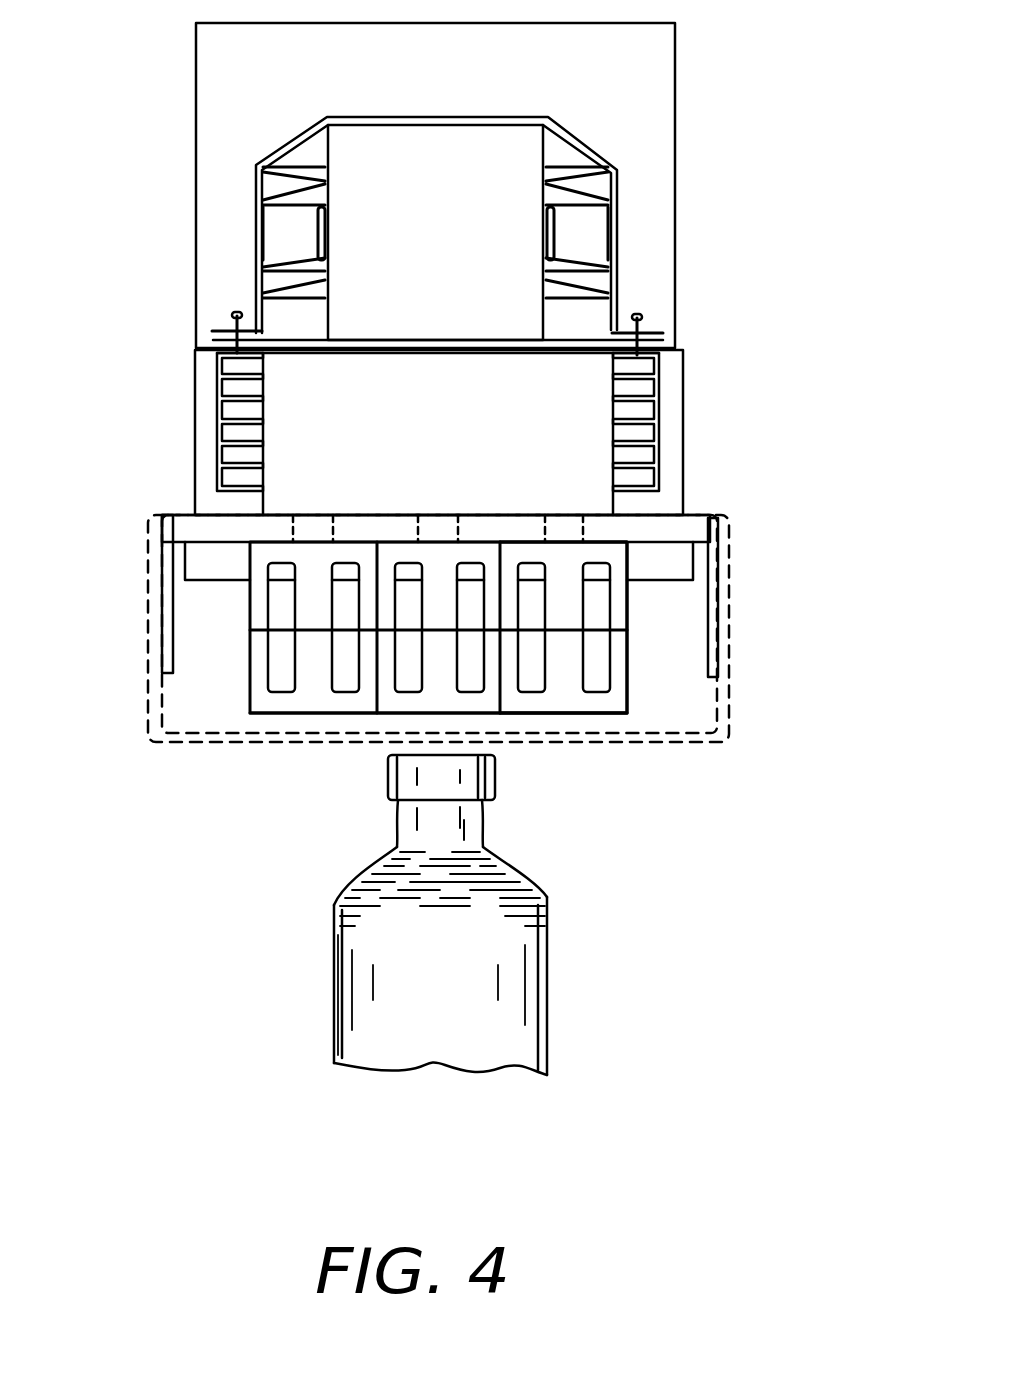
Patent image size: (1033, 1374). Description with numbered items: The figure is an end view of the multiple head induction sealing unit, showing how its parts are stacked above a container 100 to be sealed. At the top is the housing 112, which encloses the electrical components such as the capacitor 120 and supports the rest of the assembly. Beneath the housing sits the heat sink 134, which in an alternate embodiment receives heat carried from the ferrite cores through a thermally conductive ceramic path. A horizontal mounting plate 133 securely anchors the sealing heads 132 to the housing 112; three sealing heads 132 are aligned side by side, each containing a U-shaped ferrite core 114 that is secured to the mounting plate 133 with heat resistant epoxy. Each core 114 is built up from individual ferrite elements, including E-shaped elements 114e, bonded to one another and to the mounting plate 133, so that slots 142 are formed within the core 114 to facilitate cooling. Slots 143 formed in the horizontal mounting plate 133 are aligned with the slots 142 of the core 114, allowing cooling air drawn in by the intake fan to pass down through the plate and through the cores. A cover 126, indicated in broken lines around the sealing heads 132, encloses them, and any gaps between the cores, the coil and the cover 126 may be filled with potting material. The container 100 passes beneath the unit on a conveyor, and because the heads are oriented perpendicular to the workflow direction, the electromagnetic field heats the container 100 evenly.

The container 100 is at (530, 970).
The housing 112 is at (677, 130).
The ferrite core 114 is at (305, 697).
The E-shaped ferrite element 114e is at (630, 650).
The capacitor 120 is at (463, 147).
The cover 126 is at (735, 703).
The sealing head 132 is at (613, 717).
The horizontal mounting plate 133 is at (150, 508).
The heat sink 134 is at (216, 398).
The slot 142 is at (600, 610).
The slot 143 is at (563, 530).